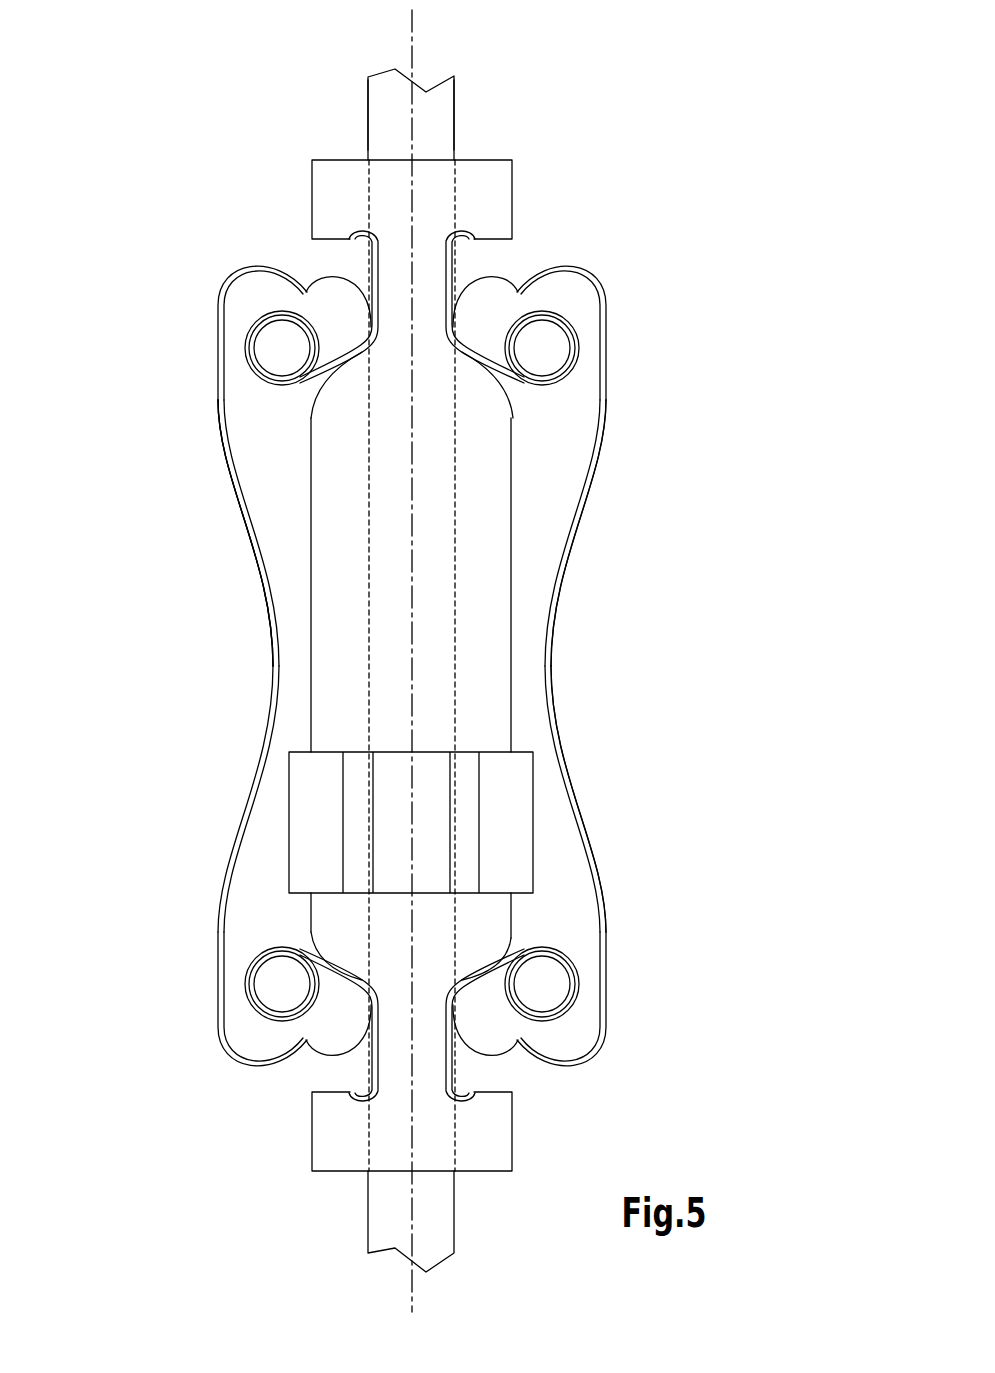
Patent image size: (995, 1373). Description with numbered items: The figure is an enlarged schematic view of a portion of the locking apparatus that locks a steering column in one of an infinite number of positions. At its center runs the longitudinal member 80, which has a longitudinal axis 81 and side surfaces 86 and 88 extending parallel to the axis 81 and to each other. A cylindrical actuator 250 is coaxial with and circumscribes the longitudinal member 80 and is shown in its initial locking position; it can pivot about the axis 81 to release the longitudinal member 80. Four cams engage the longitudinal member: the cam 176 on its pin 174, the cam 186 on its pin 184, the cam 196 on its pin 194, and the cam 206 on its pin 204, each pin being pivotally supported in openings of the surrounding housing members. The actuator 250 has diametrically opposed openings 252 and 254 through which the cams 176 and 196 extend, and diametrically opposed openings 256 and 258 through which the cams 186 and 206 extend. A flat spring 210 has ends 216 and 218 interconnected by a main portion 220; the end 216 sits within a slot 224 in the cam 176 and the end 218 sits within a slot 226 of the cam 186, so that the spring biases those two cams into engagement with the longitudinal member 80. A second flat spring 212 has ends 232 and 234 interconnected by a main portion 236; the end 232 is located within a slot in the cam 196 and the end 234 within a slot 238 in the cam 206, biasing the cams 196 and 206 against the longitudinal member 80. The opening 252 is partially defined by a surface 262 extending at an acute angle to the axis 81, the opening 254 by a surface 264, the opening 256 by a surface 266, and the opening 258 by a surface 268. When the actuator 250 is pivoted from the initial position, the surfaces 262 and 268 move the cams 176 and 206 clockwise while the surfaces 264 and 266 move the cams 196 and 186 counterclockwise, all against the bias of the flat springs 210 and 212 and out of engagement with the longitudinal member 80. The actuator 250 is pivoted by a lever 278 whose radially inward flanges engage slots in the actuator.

The longitudinal member 80 is at (368, 139).
The longitudinal axis 81 is at (412, 38).
The side surface 86 is at (455, 114).
The side surface 88 is at (368, 110).
The pin 174 is at (548, 355).
The cam 176 is at (490, 288).
The pin 184 is at (541, 983).
The cam 186 is at (488, 1041).
The pin 194 is at (282, 352).
The cam 196 is at (328, 295).
The pin 204 is at (282, 984).
The cam 206 is at (300, 1026).
The flat spring 210 is at (575, 538).
The flat spring 212 is at (247, 541).
The end 216 is at (604, 311).
The end 218 is at (573, 1068).
The main portion 220 is at (552, 669).
The slot 224 is at (521, 293).
The slot 226 is at (519, 1042).
The end 232 is at (218, 339).
The end 234 is at (252, 1064).
The main portion 236 is at (302, 293).
The slot 238 is at (310, 1052).
The cylindrical actuator 250 is at (493, 191).
The opening 252 is at (488, 258).
The opening 254 is at (330, 256).
The opening 256 is at (490, 1074).
The opening 258 is at (331, 1074).
The surface 262 is at (468, 356).
The surface 264 is at (340, 352).
The surface 266 is at (468, 978).
The surface 268 is at (326, 957).
The lever 278 is at (514, 796).